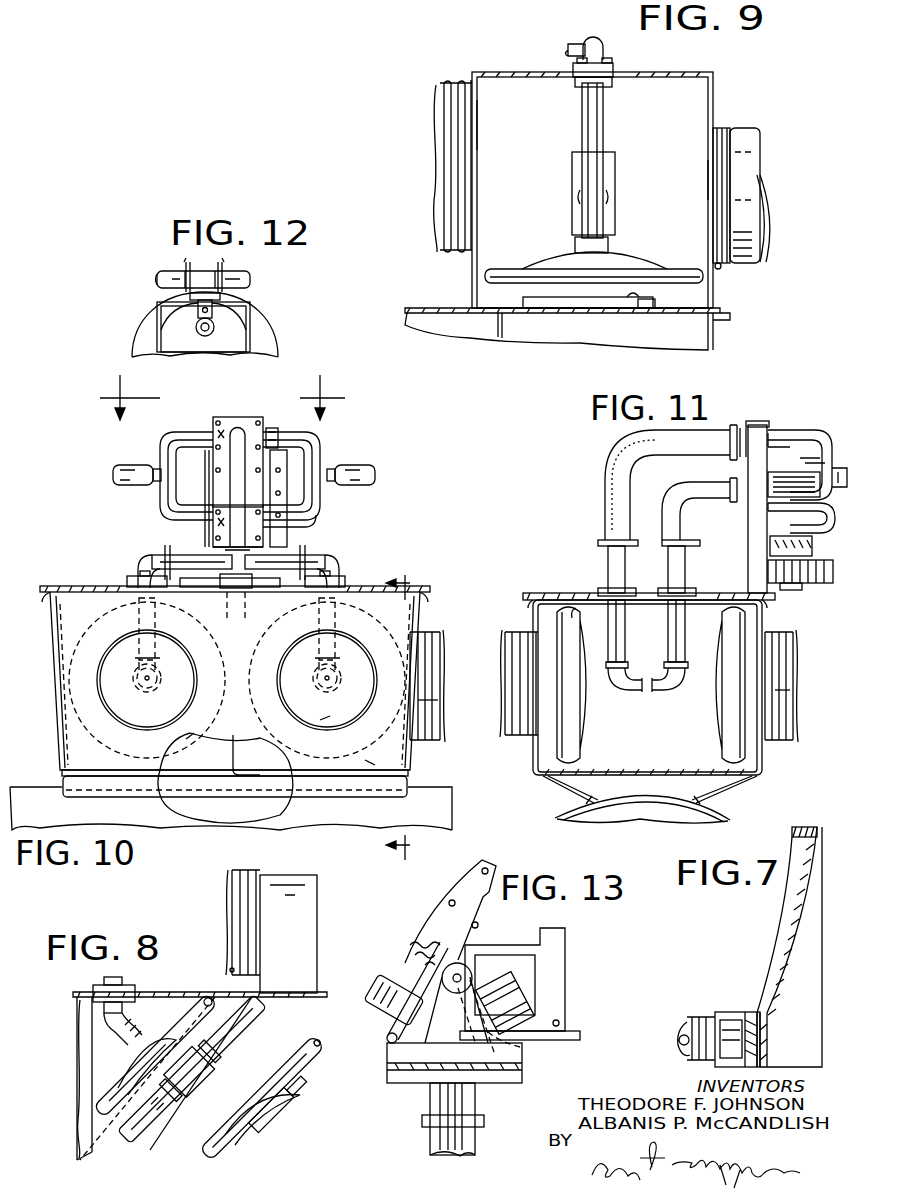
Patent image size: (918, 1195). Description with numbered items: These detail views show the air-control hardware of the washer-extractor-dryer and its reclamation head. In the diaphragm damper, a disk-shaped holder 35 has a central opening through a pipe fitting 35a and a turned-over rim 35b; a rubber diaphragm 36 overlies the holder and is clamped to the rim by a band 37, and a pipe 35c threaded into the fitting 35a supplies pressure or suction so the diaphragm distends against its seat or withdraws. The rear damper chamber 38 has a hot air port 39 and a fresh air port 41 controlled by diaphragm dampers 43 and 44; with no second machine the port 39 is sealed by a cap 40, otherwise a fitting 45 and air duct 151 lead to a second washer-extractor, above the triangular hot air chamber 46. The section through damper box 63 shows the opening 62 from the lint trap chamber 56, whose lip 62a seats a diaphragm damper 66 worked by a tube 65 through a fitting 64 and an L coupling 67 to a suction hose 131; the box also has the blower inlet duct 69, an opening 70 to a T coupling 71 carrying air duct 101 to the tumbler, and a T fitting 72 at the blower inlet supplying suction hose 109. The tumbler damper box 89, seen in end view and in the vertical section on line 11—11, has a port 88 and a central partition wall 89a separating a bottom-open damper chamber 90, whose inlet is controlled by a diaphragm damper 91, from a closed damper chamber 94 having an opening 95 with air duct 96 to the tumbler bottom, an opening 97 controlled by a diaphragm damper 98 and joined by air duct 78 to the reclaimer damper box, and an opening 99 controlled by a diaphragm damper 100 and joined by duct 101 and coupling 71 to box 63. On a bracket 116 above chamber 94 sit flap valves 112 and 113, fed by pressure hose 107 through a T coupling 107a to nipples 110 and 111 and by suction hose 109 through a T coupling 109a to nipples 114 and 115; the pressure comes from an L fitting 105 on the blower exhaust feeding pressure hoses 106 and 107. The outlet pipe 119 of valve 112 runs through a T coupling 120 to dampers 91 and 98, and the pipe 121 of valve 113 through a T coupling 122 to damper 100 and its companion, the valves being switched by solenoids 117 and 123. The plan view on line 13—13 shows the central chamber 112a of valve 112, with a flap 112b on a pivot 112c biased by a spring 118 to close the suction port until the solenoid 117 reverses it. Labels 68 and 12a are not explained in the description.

In FIG. 9, the damper box 63 is at (714, 82).
In FIG. 9, the lint trap chamber 56 is at (686, 328).
In FIG. 9, the opening 62 is at (638, 308).
In FIG. 9, the lip 62a is at (656, 302).
In FIG. 9, the fitting 64 is at (612, 70).
In FIG. 9, the tube 65 is at (598, 133).
In FIG. 9, the diaphragm damper 66 is at (631, 260).
In FIG. 9, the L coupling 67 is at (591, 40).
In FIG. 9, the side wall 68 is at (480, 143).
In FIG. 9, the inlet duct 69 is at (436, 100).
In FIG. 9, the opening 70 is at (706, 178).
In FIG. 9, the T coupling 71 is at (746, 134).
In FIG. 9, the T fitting 72 is at (615, 196).
In FIG. 9, the suction hose 131 is at (568, 48).
In FIG. 12, the L fitting 105 is at (213, 318).
In FIG. 12, the pressure hose 106 is at (245, 265).
In FIG. 12, the pressure hose 107 is at (156, 277).
In FIG. 10, the pressure hose 107 is at (126, 480).
In FIG. 10, the section line 13— 13 is at (219, 392).
In FIG. 10, the section line 11— 11 is at (409, 718).
In FIG. 10, the valve 112 is at (252, 417).
In FIG. 11, the valve 112 is at (775, 405).
In FIG. 10, the outlet pipe 119 is at (233, 481).
In FIG. 11, the outlet pipe 119 is at (614, 468).
In FIG. 13, the outlet pipe 119 is at (476, 1138).
In FIG. 10, the nipple 110 is at (197, 431).
In FIG. 13, the nipple 110 is at (385, 981).
In FIG. 10, the T coupling 107a is at (170, 454).
In FIG. 10, the suction hose 109 is at (373, 480).
In FIG. 10, the T coupling 109a is at (322, 448).
In FIG. 10, the solenoid 117 is at (316, 440).
In FIG. 11, the solenoid 117 is at (828, 452).
In FIG. 13, the solenoid 117 is at (559, 954).
In FIG. 10, the nipple 114 is at (279, 434).
In FIG. 11, the nipple 114 is at (804, 428).
In FIG. 13, the nipple 114 is at (515, 992).
In FIG. 10, the bracket 116 is at (294, 496).
In FIG. 11, the bracket 116 is at (768, 490).
In FIG. 10, the nipple 111 is at (188, 530).
In FIG. 10, the valve 113 is at (262, 520).
In FIG. 11, the valve 113 is at (770, 528).
In FIG. 10, the nipple 115 is at (321, 515).
In FIG. 11, the nipple 115 is at (816, 544).
In FIG. 10, the T coupling 120 is at (172, 555).
In FIG. 11, the T coupling 120 is at (600, 535).
In FIG. 10, the solenoid 123 is at (240, 577).
In FIG. 11, the solenoid 123 is at (811, 584).
In FIG. 10, the diaphragm damper 91 is at (108, 594).
In FIG. 10, the tumbler damper box 89 is at (56, 647).
In FIG. 11, the tumbler damper box 89 is at (528, 598).
In FIG. 10, the base 12a is at (420, 793).
In FIG. 11, the base 12a is at (727, 813).
In FIG. 10, the port 88 is at (110, 686).
In FIG. 10, the central partition wall 89a is at (180, 702).
In FIG. 10, the opening 95 is at (438, 645).
In FIG. 10, the air duct 96 is at (437, 690).
In FIG. 10, the damper chamber 94 is at (255, 750).
In FIG. 11, the damper chamber 94 is at (590, 748).
In FIG. 10, the damper chamber 90 is at (205, 750).
In FIG. 10, the opening 97 is at (324, 720).
In FIG. 11, the opening 97 is at (575, 612).
In FIG. 10, the diaphragm damper 98 is at (368, 760).
In FIG. 11, the diaphragm damper 98 is at (572, 612).
In FIG. 11, the T coupling 122 is at (688, 580).
In FIG. 11, the pipe 121 is at (680, 524).
In FIG. 11, the opening 99 is at (766, 631).
In FIG. 11, the diaphragm damper 100 is at (722, 730).
In FIG. 11, the air duct 101 is at (794, 689).
In FIG. 11, the air duct 78 is at (507, 721).
In FIG. 8, the hot air chamber 46 is at (145, 1020).
In FIG. 8, the hot air port 39 is at (140, 1134).
In FIG. 8, the diaphragm damper 43 is at (198, 1010).
In FIG. 8, the damper chamber 38 is at (166, 1135).
In FIG. 8, the cap 40 is at (234, 1034).
In FIG. 8, the fresh air port 41 is at (290, 1047).
In FIG. 8, the diaphragm damper 44 is at (232, 1141).
In FIG. 8, the air duct 151 is at (230, 901).
In FIG. 8, the fitting 45 is at (303, 911).
In FIG. 13, the central chamber 112a is at (440, 1032).
In FIG. 13, the flap 112b is at (520, 1055).
In FIG. 13, the pivot 112c is at (495, 935).
In FIG. 13, the spring 118 is at (414, 942).
In FIG. 7, the clamping band 37 is at (802, 852).
In FIG. 7, the holder 35 is at (779, 927).
In FIG. 7, the flexible diaphragm 36 is at (777, 960).
In FIG. 7, the pipe fitting 35a is at (748, 1010).
In FIG. 7, the turned-over peripheral rim 35b is at (795, 837).
In FIG. 7, the pipe 35c is at (690, 1063).